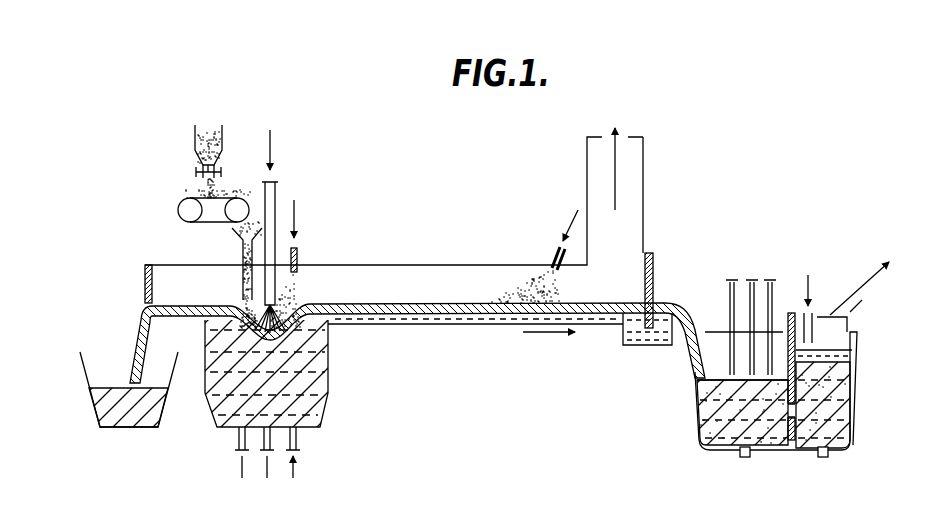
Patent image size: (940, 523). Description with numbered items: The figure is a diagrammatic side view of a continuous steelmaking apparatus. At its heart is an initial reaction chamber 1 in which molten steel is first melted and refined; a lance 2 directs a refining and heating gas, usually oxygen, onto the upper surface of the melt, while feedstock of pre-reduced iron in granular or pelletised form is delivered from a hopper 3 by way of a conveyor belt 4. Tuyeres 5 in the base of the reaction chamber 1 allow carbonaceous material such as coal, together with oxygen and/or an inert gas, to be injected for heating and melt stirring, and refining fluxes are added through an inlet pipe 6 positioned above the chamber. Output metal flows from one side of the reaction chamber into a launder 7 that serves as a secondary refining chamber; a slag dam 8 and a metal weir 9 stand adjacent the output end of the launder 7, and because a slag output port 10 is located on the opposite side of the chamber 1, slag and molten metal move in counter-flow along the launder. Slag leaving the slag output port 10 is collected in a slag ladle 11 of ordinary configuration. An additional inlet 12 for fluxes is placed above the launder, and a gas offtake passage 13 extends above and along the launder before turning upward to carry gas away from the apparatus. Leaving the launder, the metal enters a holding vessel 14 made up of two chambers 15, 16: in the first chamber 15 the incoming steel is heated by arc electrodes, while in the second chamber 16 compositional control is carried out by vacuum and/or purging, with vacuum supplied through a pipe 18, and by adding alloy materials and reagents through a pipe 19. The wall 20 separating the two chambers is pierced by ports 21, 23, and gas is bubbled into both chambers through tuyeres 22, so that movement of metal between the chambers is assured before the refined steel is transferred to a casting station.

The initial reaction chamber 1 is at (330, 380).
The lance 2 is at (277, 197).
The hopper 3 is at (222, 132).
The conveyor belt 4 is at (224, 196).
The tuyeres 5 is at (325, 453).
The inlet pipe 6 is at (300, 256).
The launder 7 is at (600, 326).
The slag dam 8 is at (655, 262).
The metal weir 9 is at (640, 346).
The slag output port 10 is at (143, 308).
The slag ladle 11 is at (90, 388).
The additional inlet 12 is at (560, 248).
The gas offtake passage 13 is at (407, 277).
The holding vessel 14 is at (695, 402).
The first chamber 15 is at (700, 446).
The second chamber 16 is at (850, 395).
The vacuum pipe 18 is at (863, 300).
The addition pipe 19 is at (850, 318).
The separating wall 20 is at (857, 350).
The port 21 is at (796, 415).
The tuyeres 22 is at (828, 455).
The port 23 is at (790, 452).